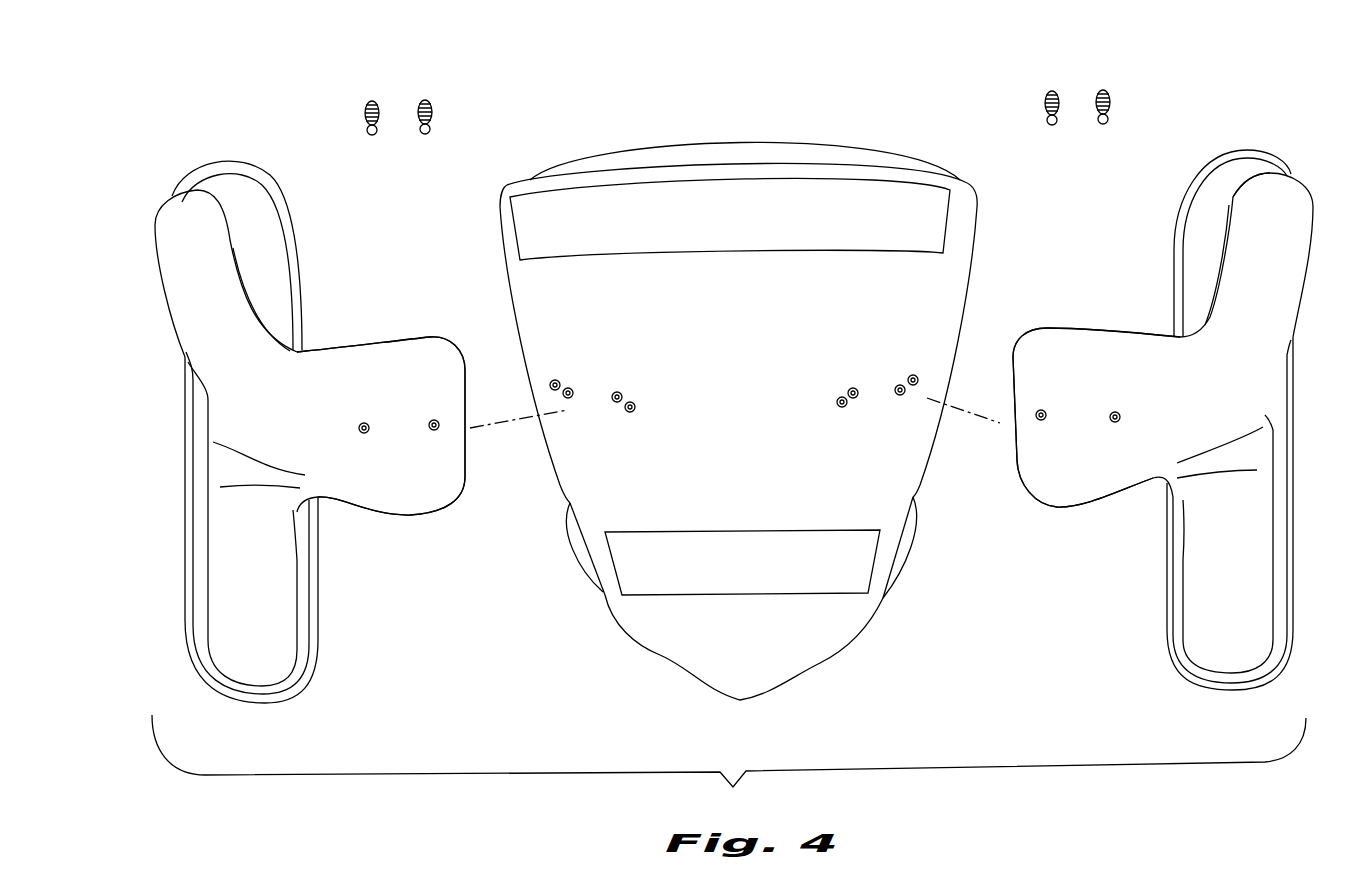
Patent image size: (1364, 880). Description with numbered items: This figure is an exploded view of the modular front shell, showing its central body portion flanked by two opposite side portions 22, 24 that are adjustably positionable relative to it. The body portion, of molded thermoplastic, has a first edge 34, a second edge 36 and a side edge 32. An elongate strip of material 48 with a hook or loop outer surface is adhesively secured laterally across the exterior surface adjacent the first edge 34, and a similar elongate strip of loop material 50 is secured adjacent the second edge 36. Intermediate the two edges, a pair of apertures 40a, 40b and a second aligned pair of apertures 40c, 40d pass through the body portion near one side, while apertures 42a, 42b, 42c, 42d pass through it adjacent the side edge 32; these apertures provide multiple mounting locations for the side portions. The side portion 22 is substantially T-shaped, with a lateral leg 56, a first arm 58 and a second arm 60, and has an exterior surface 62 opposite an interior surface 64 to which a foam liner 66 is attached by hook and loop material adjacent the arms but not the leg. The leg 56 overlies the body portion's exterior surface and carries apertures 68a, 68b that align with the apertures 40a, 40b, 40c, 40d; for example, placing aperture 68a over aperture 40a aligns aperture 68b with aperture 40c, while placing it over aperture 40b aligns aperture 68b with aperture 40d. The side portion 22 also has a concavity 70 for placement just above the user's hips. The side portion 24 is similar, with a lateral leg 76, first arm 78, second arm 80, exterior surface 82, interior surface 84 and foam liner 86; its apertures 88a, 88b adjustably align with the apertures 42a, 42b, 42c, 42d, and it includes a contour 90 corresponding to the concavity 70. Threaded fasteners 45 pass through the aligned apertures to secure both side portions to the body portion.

The side portion 22 is at (170, 232).
The side portion 24 is at (1276, 248).
The side edge 32 is at (909, 545).
The first edge 34 is at (812, 147).
The second edge 36 is at (827, 659).
The aperture 40a is at (555, 379).
The aperture 40b is at (571, 398).
The aperture 40c is at (615, 392).
The aperture 40d is at (633, 412).
The aperture 42a is at (914, 376).
The aperture 42b is at (897, 386).
The aperture 42c is at (854, 399).
The aperture 42d is at (838, 398).
The threaded fastener 45 is at (424, 100).
The elongate strip of material 48 is at (880, 205).
The elongate strip of material 50 is at (835, 558).
The lateral leg 56 is at (389, 338).
The first arm 58 is at (185, 212).
The second arm 60 is at (244, 610).
The exterior surface 62 is at (271, 424).
The interior surface 64 is at (314, 258).
The foam liner 66 is at (289, 200).
The aperture 68a is at (361, 424).
The aperture 68b is at (431, 420).
The concavity 70 is at (232, 470).
The lateral leg 76 is at (1147, 330).
The first arm 78 is at (1250, 220).
The second arm 80 is at (1217, 642).
The exterior surface 82 is at (1198, 401).
The interior surface 84 is at (1165, 219).
The foam liner 86 is at (1253, 151).
The aperture 88a is at (1114, 412).
The aperture 88b is at (1039, 411).
The contour 90 is at (1226, 481).